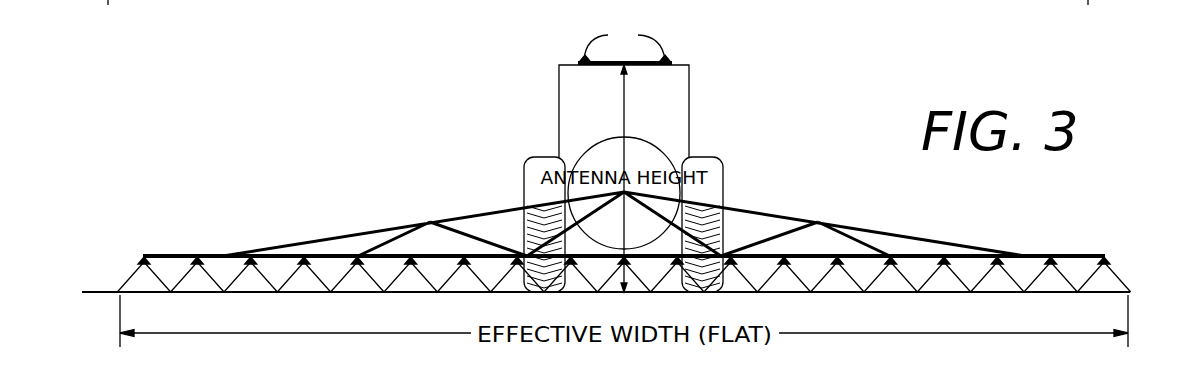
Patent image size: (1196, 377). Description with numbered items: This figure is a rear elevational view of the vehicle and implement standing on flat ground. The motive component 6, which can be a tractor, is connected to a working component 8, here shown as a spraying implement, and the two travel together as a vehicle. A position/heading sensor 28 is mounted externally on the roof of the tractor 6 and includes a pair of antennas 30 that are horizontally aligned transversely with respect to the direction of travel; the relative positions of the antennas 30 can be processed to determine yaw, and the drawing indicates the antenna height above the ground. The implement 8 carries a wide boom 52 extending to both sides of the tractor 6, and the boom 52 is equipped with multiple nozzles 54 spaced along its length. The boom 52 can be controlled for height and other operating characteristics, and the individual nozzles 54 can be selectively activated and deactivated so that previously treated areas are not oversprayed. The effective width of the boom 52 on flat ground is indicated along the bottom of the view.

The motive component 6 is at (690, 64).
The working component 8 is at (606, 138).
The position/heading sensor 28 is at (579, 62).
The antennas 30 is at (625, 42).
The boom 52 is at (298, 242).
The nozzles 54 is at (140, 257).